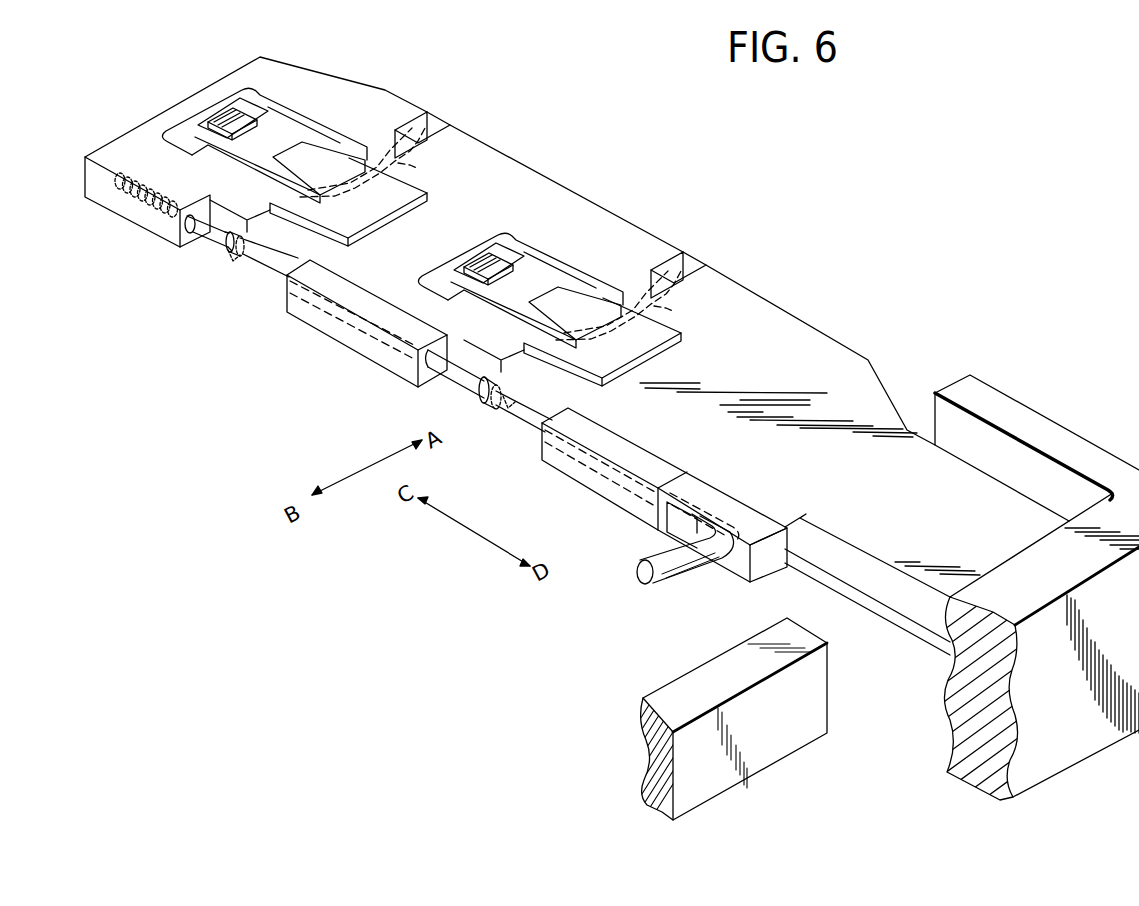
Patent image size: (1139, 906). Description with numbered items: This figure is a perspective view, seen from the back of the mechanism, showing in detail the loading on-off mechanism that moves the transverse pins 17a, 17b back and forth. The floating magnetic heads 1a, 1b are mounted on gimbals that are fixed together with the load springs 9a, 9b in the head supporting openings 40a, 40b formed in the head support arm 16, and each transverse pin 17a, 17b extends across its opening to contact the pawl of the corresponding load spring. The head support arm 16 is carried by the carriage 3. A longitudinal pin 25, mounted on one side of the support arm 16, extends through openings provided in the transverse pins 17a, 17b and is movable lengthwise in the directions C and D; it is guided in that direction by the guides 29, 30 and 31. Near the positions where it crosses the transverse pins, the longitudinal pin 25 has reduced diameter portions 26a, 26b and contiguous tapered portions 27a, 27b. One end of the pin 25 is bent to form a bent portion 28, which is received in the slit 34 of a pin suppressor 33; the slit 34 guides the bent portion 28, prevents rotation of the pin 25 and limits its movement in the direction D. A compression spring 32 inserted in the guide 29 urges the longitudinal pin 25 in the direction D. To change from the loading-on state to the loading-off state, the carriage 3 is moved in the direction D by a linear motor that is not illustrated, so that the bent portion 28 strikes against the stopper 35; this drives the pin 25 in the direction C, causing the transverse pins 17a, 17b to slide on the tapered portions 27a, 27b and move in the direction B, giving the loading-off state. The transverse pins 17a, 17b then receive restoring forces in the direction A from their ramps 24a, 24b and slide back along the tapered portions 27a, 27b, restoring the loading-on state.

The floating magnetic head 1a is at (233, 103).
The floating magnetic head 1b is at (498, 240).
The head supporting opening 40a is at (250, 96).
The head supporting opening 40b is at (507, 237).
The load spring 9a is at (310, 157).
The load spring 9b is at (570, 303).
The transverse pin 17a is at (403, 150).
The transverse pin 17b is at (653, 295).
The ramp 24a is at (420, 130).
The ramp 24b is at (680, 272).
The head support arm 16 is at (808, 337).
The carriage 3 is at (1040, 415).
The stopper 35 is at (822, 692).
The guide 29 is at (163, 230).
The compression spring 32 is at (127, 197).
The guide 30 is at (345, 340).
The guide 31 is at (590, 480).
The pin suppressor 33 is at (728, 558).
The slit 34 is at (677, 518).
The bent portion 28 is at (660, 575).
The longitudinal pin 25 is at (443, 373).
The reduced diameter portion 26a is at (232, 252).
The reduced diameter portion 26b is at (481, 394).
The tapered portion 27a is at (245, 266).
The tapered portion 27b is at (503, 408).